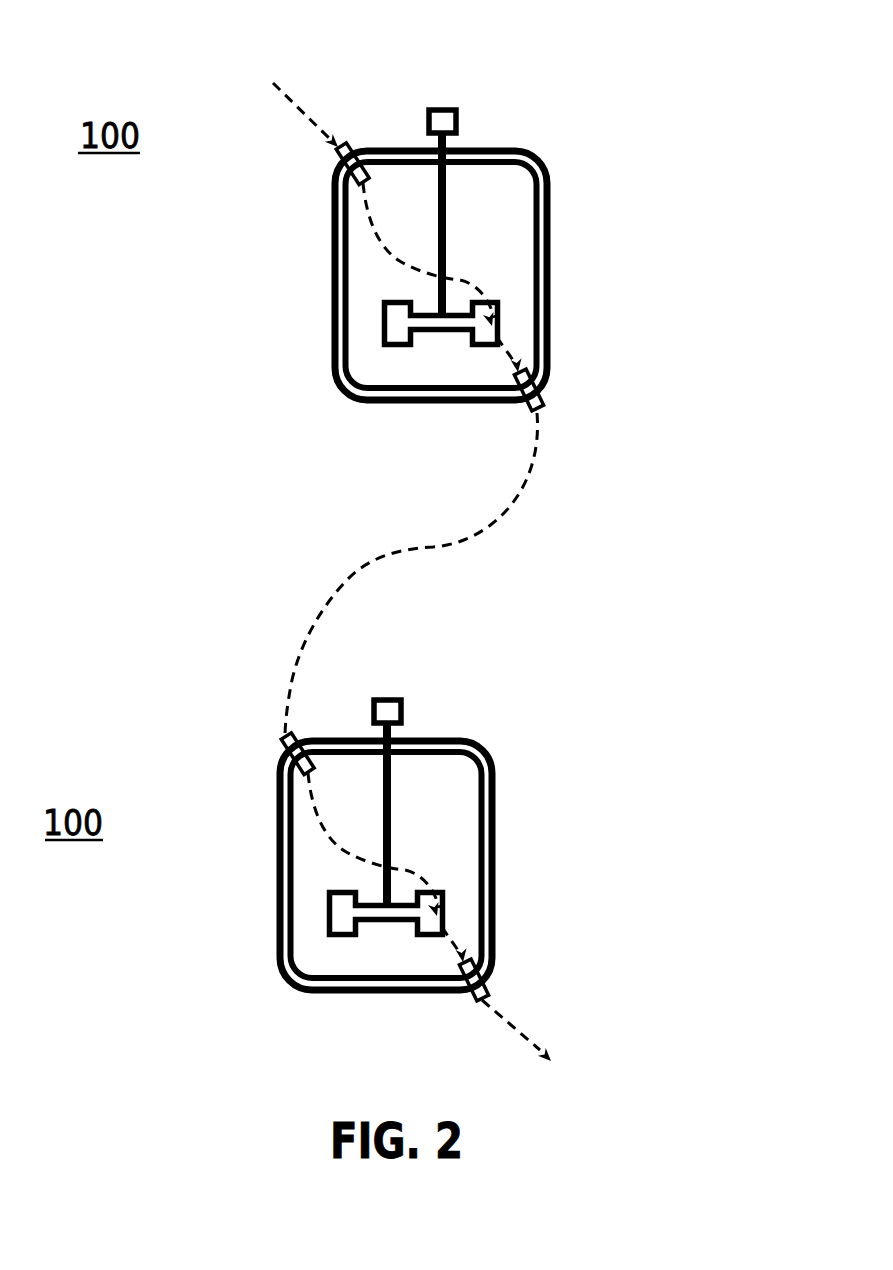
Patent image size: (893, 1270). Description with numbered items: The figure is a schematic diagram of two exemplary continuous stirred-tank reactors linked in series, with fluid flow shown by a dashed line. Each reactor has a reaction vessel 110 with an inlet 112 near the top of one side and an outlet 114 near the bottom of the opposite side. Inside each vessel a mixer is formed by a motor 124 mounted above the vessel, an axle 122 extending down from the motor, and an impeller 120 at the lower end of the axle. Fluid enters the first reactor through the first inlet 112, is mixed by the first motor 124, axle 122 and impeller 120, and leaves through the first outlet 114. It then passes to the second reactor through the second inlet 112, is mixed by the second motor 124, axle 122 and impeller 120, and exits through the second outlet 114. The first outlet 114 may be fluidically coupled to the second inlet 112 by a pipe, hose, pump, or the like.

The reaction vessel 110 is at (340, 308).
The inlet 112 is at (336, 156).
The outlet 114 is at (520, 410).
The impeller 120 is at (497, 321).
The axle 122 is at (448, 268).
The motor 124 is at (442, 108).